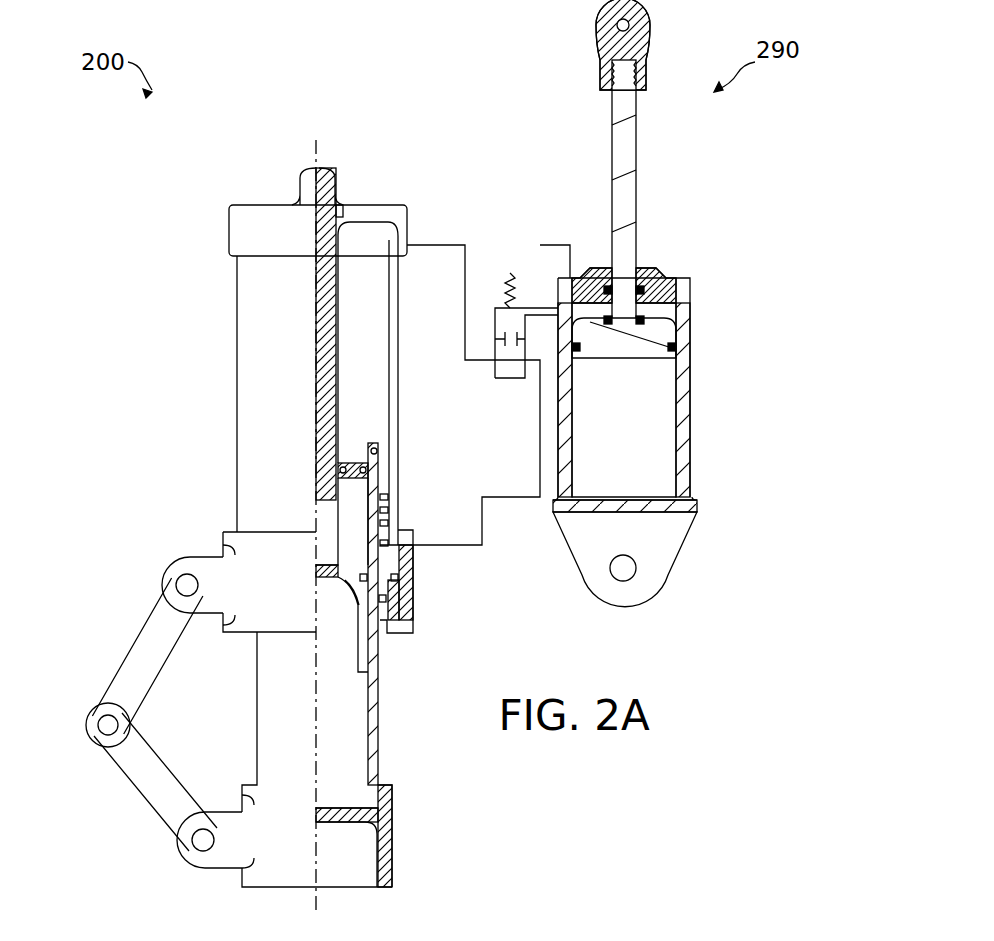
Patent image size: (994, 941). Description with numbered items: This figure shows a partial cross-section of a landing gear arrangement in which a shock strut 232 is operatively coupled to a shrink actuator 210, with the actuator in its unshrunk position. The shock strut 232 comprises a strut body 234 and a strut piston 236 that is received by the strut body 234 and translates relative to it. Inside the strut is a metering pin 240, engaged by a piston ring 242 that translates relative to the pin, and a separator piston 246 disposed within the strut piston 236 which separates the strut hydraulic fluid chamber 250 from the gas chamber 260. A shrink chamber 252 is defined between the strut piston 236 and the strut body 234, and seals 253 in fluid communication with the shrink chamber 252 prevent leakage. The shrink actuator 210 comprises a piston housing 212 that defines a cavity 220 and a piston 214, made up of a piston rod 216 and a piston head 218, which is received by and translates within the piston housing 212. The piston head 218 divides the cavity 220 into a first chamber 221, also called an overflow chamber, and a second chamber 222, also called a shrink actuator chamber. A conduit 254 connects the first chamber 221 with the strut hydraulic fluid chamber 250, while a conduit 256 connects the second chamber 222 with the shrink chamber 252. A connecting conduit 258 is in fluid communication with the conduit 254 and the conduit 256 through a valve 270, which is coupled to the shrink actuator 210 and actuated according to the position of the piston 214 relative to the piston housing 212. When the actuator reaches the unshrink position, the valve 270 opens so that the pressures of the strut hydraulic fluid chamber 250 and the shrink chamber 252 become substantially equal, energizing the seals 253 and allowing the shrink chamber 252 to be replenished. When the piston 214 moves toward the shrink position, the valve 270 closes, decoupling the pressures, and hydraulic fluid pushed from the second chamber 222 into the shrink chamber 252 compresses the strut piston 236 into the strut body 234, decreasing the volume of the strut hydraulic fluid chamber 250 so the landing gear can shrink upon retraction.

The shrink actuator 210 is at (690, 368).
The piston housing 212 is at (683, 406).
The piston 214 is at (640, 240).
The piston rod 216 is at (628, 143).
The piston head 218 is at (665, 330).
The cavity 220 is at (624, 427).
The first chamber 221 is at (690, 300).
The second chamber 222 is at (652, 468).
The shock strut 232 is at (237, 412).
The strut body 234 is at (237, 473).
The strut piston 236 is at (257, 712).
The metering pin 240 is at (328, 320).
The piston ring 242 is at (342, 465).
The separator piston 246 is at (343, 582).
The strut hydraulic fluid chamber 250 is at (363, 349).
The shrink chamber 252 is at (405, 560).
The seals 253 is at (383, 510).
The conduit 254 is at (493, 245).
The conduit 256 is at (483, 530).
The connecting conduit 258 is at (540, 430).
The gas chamber 260 is at (341, 690).
The valve 270 is at (495, 376).